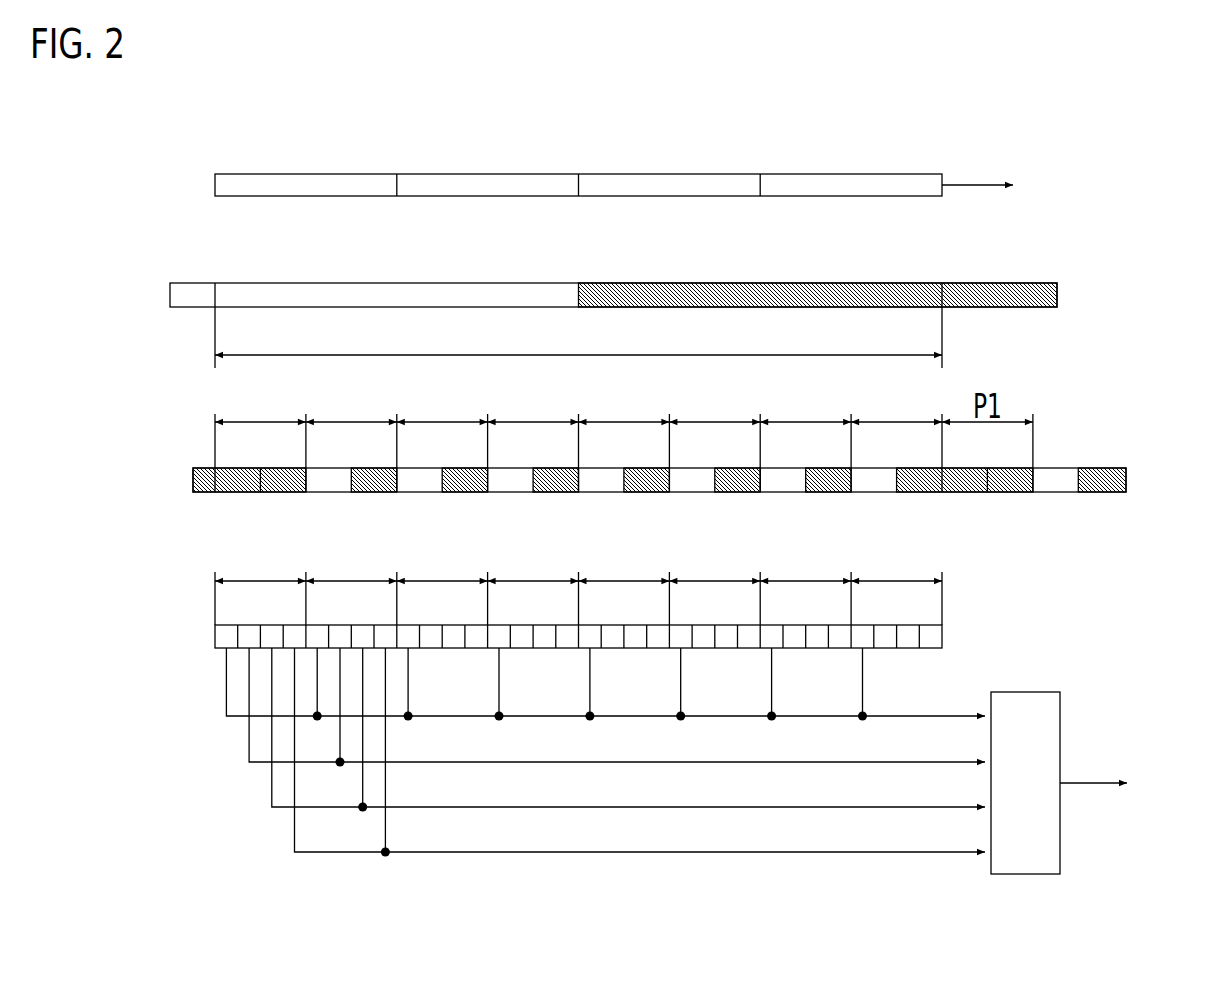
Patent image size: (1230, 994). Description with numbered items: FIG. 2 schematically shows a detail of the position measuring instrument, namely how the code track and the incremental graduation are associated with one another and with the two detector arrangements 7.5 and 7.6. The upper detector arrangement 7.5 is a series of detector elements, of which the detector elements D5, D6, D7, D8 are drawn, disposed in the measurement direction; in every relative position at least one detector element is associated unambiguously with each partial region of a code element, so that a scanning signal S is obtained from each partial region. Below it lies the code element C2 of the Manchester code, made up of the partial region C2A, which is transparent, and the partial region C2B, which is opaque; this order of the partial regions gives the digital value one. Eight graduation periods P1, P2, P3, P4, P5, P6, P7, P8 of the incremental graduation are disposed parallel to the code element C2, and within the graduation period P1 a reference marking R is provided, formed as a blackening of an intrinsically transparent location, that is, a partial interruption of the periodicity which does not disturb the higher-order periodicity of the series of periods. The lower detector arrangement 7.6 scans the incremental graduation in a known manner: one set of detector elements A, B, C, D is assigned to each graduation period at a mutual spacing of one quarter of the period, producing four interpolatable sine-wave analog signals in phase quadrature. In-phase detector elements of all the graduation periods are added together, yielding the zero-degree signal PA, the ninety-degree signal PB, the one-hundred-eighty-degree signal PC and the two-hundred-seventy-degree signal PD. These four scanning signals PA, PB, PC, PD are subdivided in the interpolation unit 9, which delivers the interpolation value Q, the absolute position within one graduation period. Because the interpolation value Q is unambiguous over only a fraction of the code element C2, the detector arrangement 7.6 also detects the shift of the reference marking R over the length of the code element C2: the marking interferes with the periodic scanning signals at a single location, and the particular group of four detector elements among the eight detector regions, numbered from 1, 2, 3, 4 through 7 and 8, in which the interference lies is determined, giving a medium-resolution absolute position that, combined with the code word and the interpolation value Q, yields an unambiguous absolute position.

The detector arrangement 7.5 is at (921, 186).
The detector arrangement 7.6 is at (944, 633).
The interpolation unit 9 is at (1020, 857).
The scanning signal S is at (977, 184).
The interpolation value Q is at (1093, 761).
The reference marking R is at (232, 488).
The code element C2 is at (578, 338).
The partial region C2A is at (388, 292).
The partial region C2B is at (749, 295).
The detector element D5 is at (297, 183).
The detector element D6 is at (477, 183).
The detector element D7 is at (657, 183).
The detector element D8 is at (840, 183).
The graduation period P1 is at (260, 406).
The graduation period P2 is at (351, 406).
The graduation period P3 is at (442, 406).
The graduation period P4 is at (533, 406).
The graduation period P5 is at (624, 406).
The graduation period P6 is at (714, 406).
The graduation period P7 is at (805, 406).
The graduation period P8 is at (896, 406).
The 0° signal PA is at (605, 684).
The 90° signal PB is at (617, 707).
The 180° signal PC is at (628, 730).
The 270° signal PD is at (640, 752).
The group of four 1 is at (260, 566).
The group of four 2 is at (351, 566).
The group of four 3 is at (442, 566).
The group of four 4 is at (533, 566).
The group of four 7 is at (805, 566).
The group of four 8 is at (896, 566).